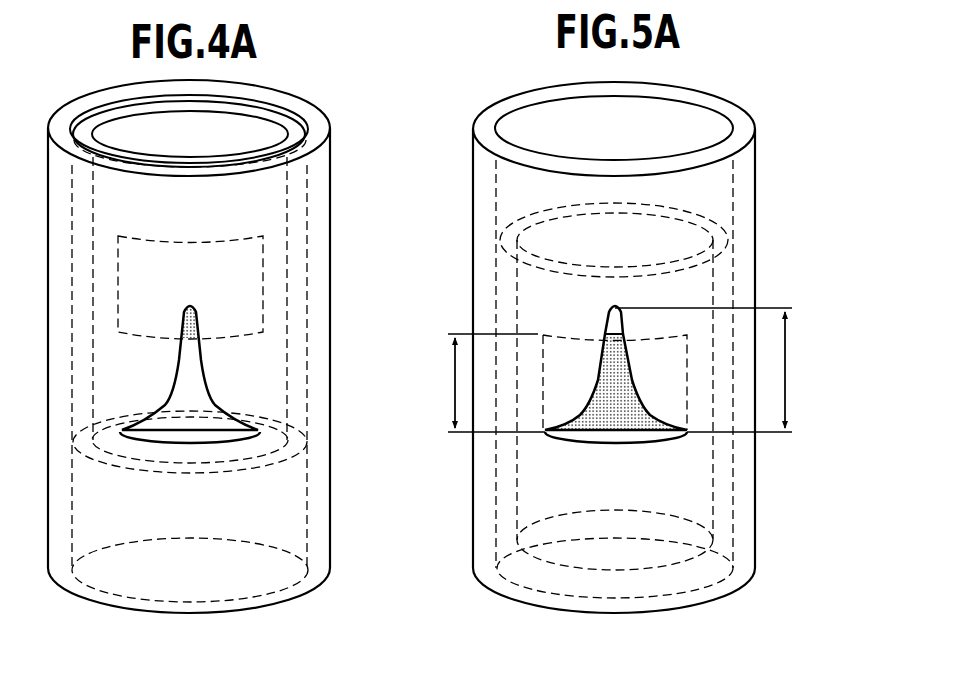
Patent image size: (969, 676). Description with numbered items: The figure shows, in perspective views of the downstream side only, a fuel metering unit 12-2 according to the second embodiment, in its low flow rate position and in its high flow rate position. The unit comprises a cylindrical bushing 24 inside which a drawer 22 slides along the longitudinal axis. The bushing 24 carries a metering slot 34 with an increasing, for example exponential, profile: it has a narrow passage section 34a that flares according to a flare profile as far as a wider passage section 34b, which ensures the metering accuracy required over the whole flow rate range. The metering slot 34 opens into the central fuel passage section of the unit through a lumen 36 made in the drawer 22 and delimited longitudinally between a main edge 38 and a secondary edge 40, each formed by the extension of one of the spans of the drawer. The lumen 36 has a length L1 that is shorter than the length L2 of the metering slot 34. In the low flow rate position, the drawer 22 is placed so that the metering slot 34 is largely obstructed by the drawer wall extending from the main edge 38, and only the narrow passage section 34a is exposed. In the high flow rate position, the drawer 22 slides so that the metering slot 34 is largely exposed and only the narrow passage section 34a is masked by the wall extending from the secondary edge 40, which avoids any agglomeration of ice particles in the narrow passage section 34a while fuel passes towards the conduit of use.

In FIG. 4A, the fuel metering unit 12-2 is at (338, 255).
In FIG. 5A, the fuel metering unit 12-2 is at (765, 253).
In FIG. 4A, the drawer 22 is at (228, 108).
In FIG. 5A, the drawer 22 is at (645, 218).
In FIG. 4A, the bushing 24 is at (298, 105).
In FIG. 5A, the bushing 24 is at (686, 97).
In FIG. 4A, the metering slot 34 is at (240, 428).
In FIG. 5A, the metering slot 34 is at (640, 429).
In FIG. 4A, the narrow passage section 34a is at (207, 308).
In FIG. 5A, the narrow passage section 34a is at (632, 308).
In FIG. 4A, the wider passage section 34b is at (178, 412).
In FIG. 4A, the lumen 36 is at (262, 283).
In FIG. 5A, the lumen 36 is at (687, 393).
In FIG. 4A, the main edge 38 is at (134, 334).
In FIG. 5A, the main edge 38 is at (588, 421).
In FIG. 4A, the secondary edge 40 is at (160, 243).
In FIG. 5A, the secondary edge 40 is at (583, 343).
In FIG. 5A, the length of the lumen L1 is at (486, 383).
In FIG. 5A, the length of the metering slot L2 is at (715, 370).